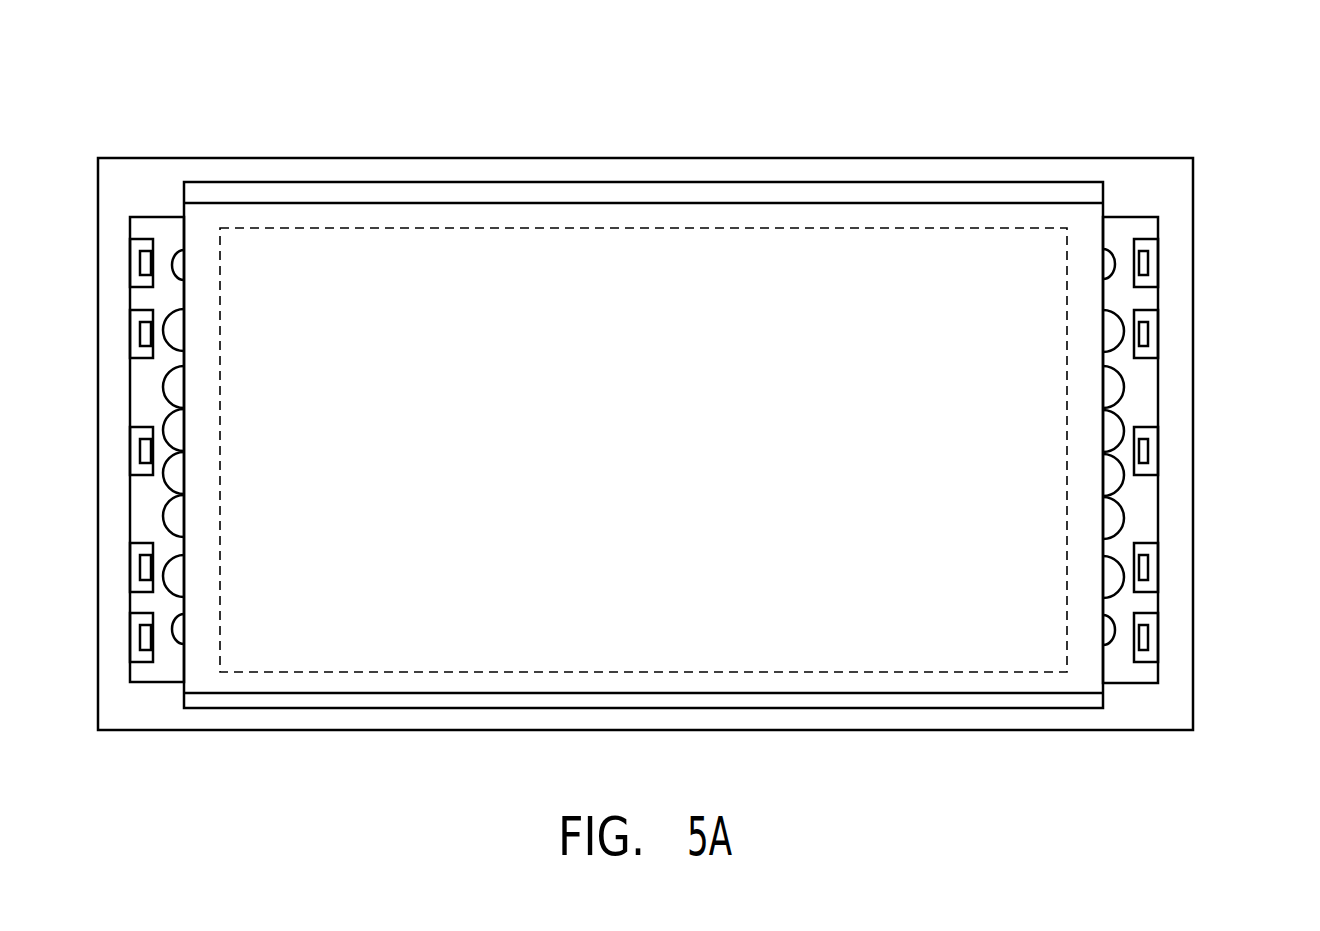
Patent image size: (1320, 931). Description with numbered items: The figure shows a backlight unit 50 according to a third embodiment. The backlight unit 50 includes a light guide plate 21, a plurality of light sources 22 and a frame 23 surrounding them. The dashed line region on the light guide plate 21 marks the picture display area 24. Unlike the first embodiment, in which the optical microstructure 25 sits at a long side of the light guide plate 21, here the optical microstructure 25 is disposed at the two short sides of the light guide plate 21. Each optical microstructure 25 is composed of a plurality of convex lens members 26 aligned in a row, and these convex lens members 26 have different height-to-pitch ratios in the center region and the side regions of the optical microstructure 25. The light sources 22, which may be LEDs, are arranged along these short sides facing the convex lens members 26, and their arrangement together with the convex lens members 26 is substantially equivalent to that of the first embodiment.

The backlight unit 50 is at (1225, 100).
The light guide plate 21 is at (1003, 213).
The light sources 22 is at (1148, 263).
The frame 23 is at (1180, 534).
The picture display area 24 is at (1020, 390).
The optical microstructure 25 is at (166, 654).
The convex lens members 26 is at (175, 512).